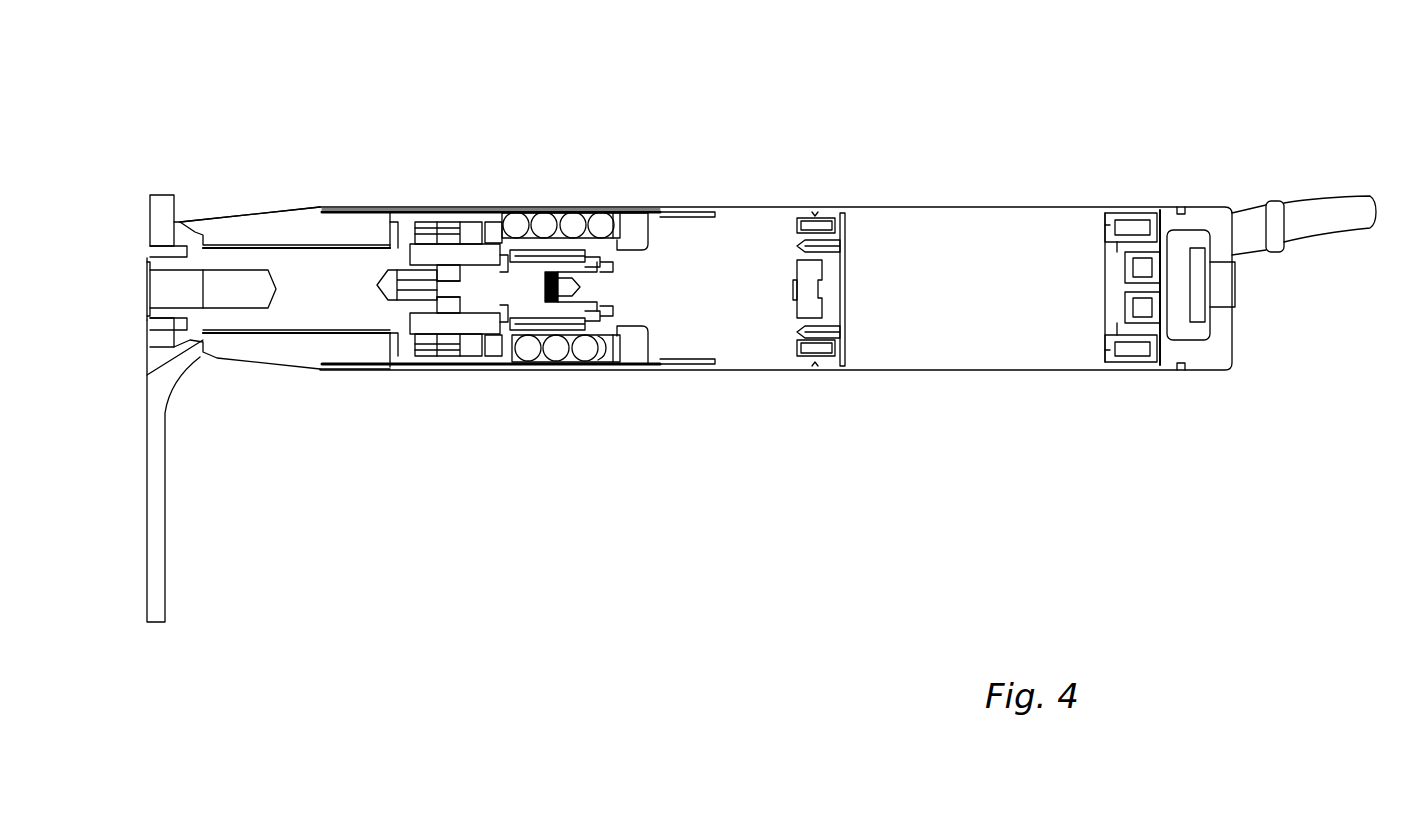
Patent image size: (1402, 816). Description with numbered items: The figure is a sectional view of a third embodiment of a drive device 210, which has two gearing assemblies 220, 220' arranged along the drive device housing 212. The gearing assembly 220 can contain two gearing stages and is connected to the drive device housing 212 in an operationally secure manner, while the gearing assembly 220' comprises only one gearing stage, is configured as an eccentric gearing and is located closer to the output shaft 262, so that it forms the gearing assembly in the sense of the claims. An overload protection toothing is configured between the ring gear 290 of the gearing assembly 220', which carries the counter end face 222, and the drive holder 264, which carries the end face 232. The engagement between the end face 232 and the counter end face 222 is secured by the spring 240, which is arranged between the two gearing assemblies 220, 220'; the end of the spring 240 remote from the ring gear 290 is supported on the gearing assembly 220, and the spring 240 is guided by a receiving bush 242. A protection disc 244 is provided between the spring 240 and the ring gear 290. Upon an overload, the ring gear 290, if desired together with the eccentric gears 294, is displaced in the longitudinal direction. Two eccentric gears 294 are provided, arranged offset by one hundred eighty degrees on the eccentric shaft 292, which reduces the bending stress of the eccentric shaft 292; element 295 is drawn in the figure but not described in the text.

The drive device 210 is at (1028, 135).
The drive device housing 212 is at (745, 372).
The gearing assembly 220 is at (569, 241).
The gearing assembly 220' is at (491, 152).
The counter end face 222 is at (400, 348).
The end face 232 is at (407, 367).
The spring 240 is at (573, 222).
The receiving bush 242 is at (636, 218).
The protection disc 244 is at (530, 245).
The output shaft 262 is at (318, 298).
The drive holder 264 is at (253, 233).
The ring gear 290 is at (435, 217).
The eccentric shaft 292 is at (532, 302).
The eccentric gears 294 is at (450, 343).
The piston rod 295 is at (452, 257).